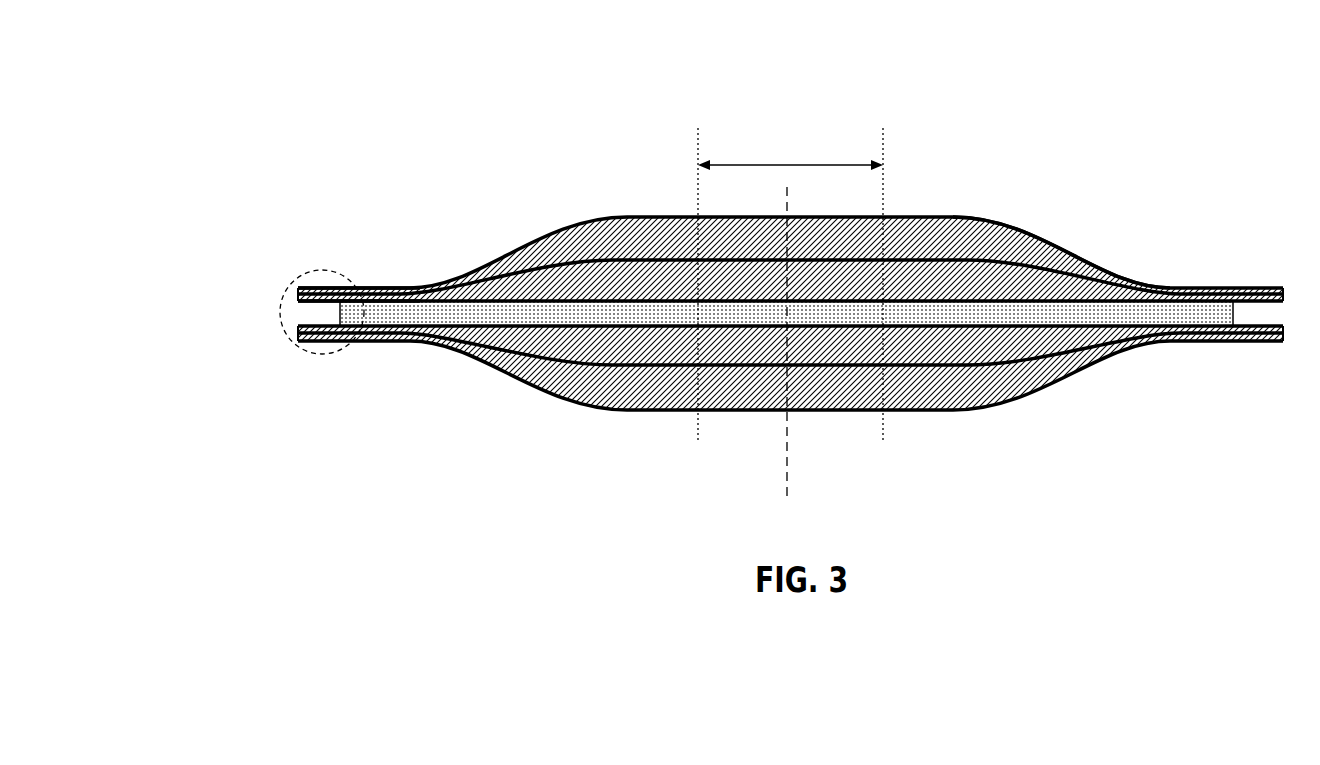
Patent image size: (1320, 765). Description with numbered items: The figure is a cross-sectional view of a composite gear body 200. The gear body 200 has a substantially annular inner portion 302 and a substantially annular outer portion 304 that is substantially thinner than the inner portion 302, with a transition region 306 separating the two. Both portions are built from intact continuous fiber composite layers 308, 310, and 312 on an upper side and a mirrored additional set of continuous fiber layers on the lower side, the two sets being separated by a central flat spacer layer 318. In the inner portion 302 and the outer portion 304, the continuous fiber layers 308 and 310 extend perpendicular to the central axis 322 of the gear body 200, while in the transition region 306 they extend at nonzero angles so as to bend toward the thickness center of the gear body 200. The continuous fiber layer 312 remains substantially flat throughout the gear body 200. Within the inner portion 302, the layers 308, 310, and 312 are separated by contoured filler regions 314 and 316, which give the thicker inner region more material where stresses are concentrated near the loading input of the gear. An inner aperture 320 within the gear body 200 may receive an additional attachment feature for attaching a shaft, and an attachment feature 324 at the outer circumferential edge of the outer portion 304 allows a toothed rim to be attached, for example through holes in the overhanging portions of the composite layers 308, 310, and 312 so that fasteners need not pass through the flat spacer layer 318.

The gear body 200 is at (196, 274).
The inner portion 302 is at (667, 215).
The outer portion 304 is at (398, 285).
The transition region 306 is at (1058, 380).
The intact continuous fiber composite layer 308 is at (940, 213).
The intact continuous fiber composite layer 310 is at (930, 258).
The intact continuous fiber composite layer 312 is at (940, 296).
The contoured filler region 314 is at (613, 238).
The contoured filler region 316 is at (613, 285).
The flat spacer layer 318 is at (613, 312).
The inner aperture 320 is at (790, 281).
The central axis 322 is at (789, 468).
The attachment feature 324 is at (342, 350).